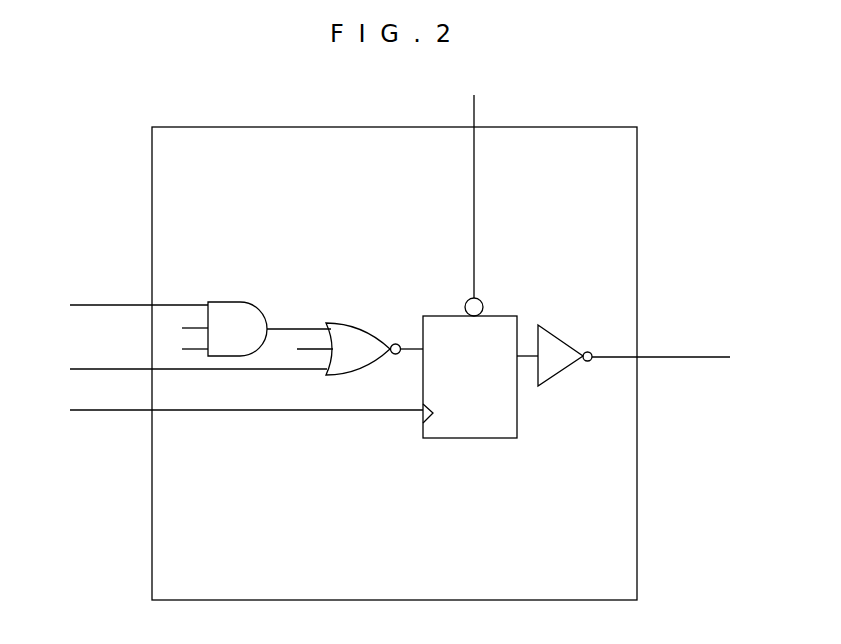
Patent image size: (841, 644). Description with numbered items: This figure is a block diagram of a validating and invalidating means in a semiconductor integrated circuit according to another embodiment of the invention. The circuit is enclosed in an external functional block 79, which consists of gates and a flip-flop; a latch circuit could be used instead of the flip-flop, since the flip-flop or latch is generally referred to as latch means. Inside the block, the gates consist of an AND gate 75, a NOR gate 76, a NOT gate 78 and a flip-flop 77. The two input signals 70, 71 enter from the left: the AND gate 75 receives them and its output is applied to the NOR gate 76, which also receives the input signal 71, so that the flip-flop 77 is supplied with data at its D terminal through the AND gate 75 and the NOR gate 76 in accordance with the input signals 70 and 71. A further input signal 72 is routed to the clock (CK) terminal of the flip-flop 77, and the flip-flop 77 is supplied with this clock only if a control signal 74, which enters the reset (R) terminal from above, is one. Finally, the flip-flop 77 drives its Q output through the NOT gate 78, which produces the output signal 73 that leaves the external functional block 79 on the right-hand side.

The input signal 70 is at (122, 310).
The input signal 71 is at (179, 371).
The input signal 72 is at (227, 419).
The output signal 73 is at (678, 358).
The control signal 74 is at (473, 179).
The AND gate 75 is at (240, 323).
The NOR gate 76 is at (351, 342).
The flip-flop 77 is at (492, 423).
The NOT gate 78 is at (560, 363).
The external functional block 79 is at (638, 277).